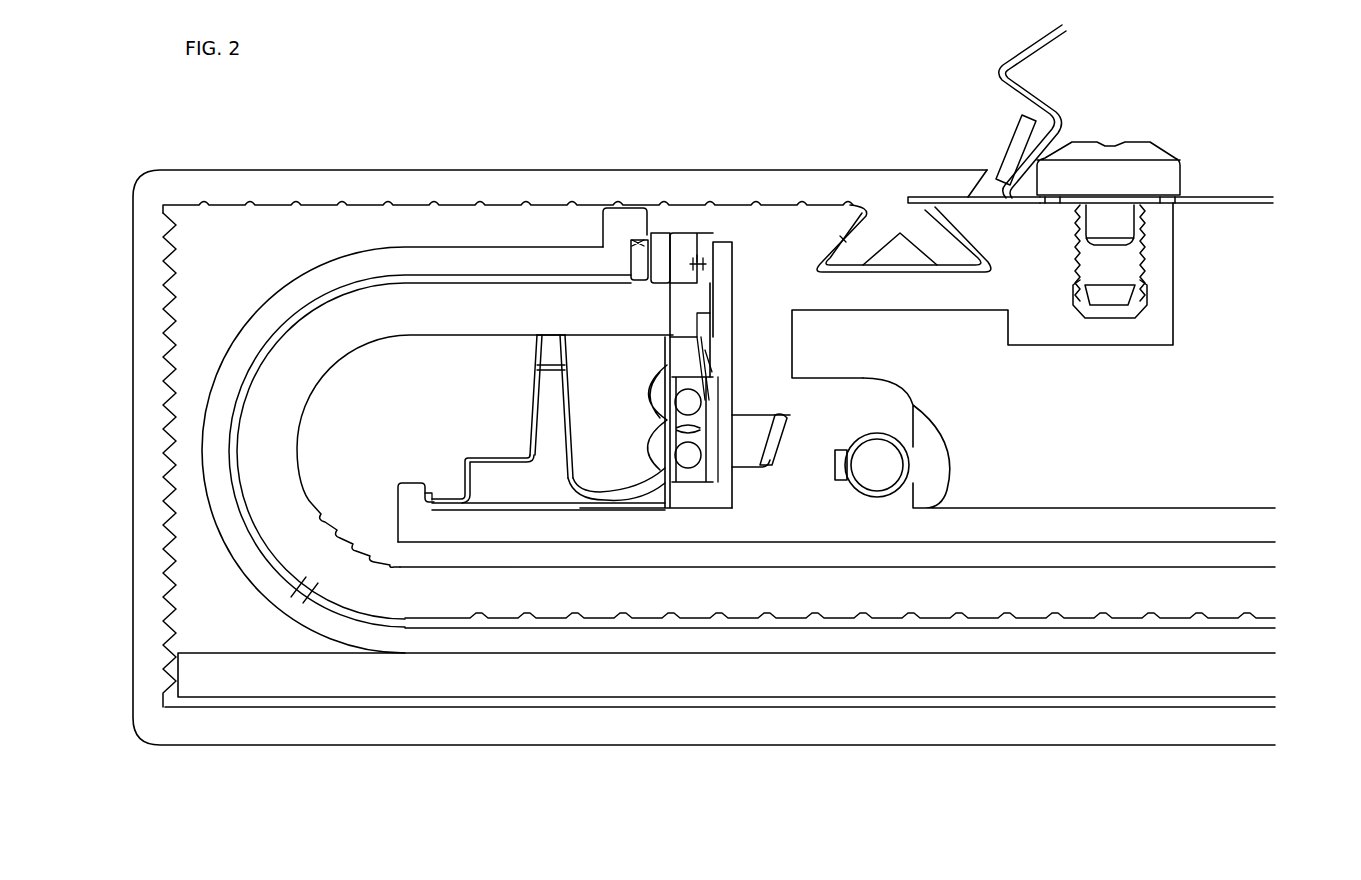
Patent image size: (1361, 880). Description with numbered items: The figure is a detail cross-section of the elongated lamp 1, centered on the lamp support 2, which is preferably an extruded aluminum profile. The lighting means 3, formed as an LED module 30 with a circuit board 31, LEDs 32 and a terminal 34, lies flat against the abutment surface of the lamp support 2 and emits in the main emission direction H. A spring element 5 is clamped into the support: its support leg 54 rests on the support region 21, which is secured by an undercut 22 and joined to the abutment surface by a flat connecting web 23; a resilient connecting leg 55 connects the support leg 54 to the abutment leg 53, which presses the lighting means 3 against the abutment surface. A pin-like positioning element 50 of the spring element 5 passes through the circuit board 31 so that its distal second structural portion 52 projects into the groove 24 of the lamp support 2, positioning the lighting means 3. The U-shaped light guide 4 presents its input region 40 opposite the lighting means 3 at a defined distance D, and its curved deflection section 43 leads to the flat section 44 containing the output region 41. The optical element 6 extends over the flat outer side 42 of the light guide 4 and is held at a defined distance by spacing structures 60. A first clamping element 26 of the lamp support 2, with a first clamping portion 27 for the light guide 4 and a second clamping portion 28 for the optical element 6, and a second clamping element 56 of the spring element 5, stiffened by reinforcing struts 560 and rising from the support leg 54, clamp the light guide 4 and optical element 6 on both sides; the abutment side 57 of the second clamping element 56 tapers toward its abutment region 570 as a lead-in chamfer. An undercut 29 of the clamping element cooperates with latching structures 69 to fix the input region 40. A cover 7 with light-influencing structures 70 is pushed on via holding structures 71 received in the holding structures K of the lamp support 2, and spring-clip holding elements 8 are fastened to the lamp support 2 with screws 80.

The elongated lamp 1 is at (456, 130).
The lamp support 2 is at (1165, 333).
The lighting means 3 is at (705, 490).
The light guide 4 is at (1182, 565).
The spring element 5 is at (532, 410).
The optical element 6 is at (273, 312).
The cover 7 is at (944, 183).
The holding elements 8 is at (1225, 203).
The support region 21 is at (398, 493).
The undercut 22 is at (428, 492).
The connecting web 23 is at (583, 532).
The fourth structural portion 24 is at (758, 470).
The first clamping element 26 is at (632, 217).
The first clamping portion 27 is at (680, 275).
The second clamping portion 28 is at (603, 232).
The undercut 29 is at (632, 262).
The LED module 30 is at (733, 260).
The circuit board 31 is at (720, 378).
The LEDs 32 is at (712, 318).
The terminal 34 is at (680, 423).
The input region 40 is at (702, 312).
The output region 41 is at (1037, 620).
The flat outer side 42 is at (300, 582).
The deflection section 43 is at (293, 432).
The flat section 44 is at (1097, 583).
The positioning element 50 is at (762, 458).
The second structural portion 52 is at (767, 422).
The abutment leg 53 is at (708, 360).
The support leg 54 is at (478, 505).
The connecting leg 55 is at (636, 503).
The second clamping element 56 is at (552, 418).
The abutment side 57 is at (554, 370).
The spacing structures 60 is at (405, 277).
The latching structures 69 is at (650, 245).
The light-influencing structures 70 is at (172, 578).
The holding structures 71 is at (947, 242).
The screws 80 is at (1160, 170).
The reinforcing struts 560 is at (490, 472).
The abutment region 570 is at (552, 332).
The defined distance D is at (698, 250).
The main emission direction H is at (691, 310).
The holding structures K is at (848, 240).